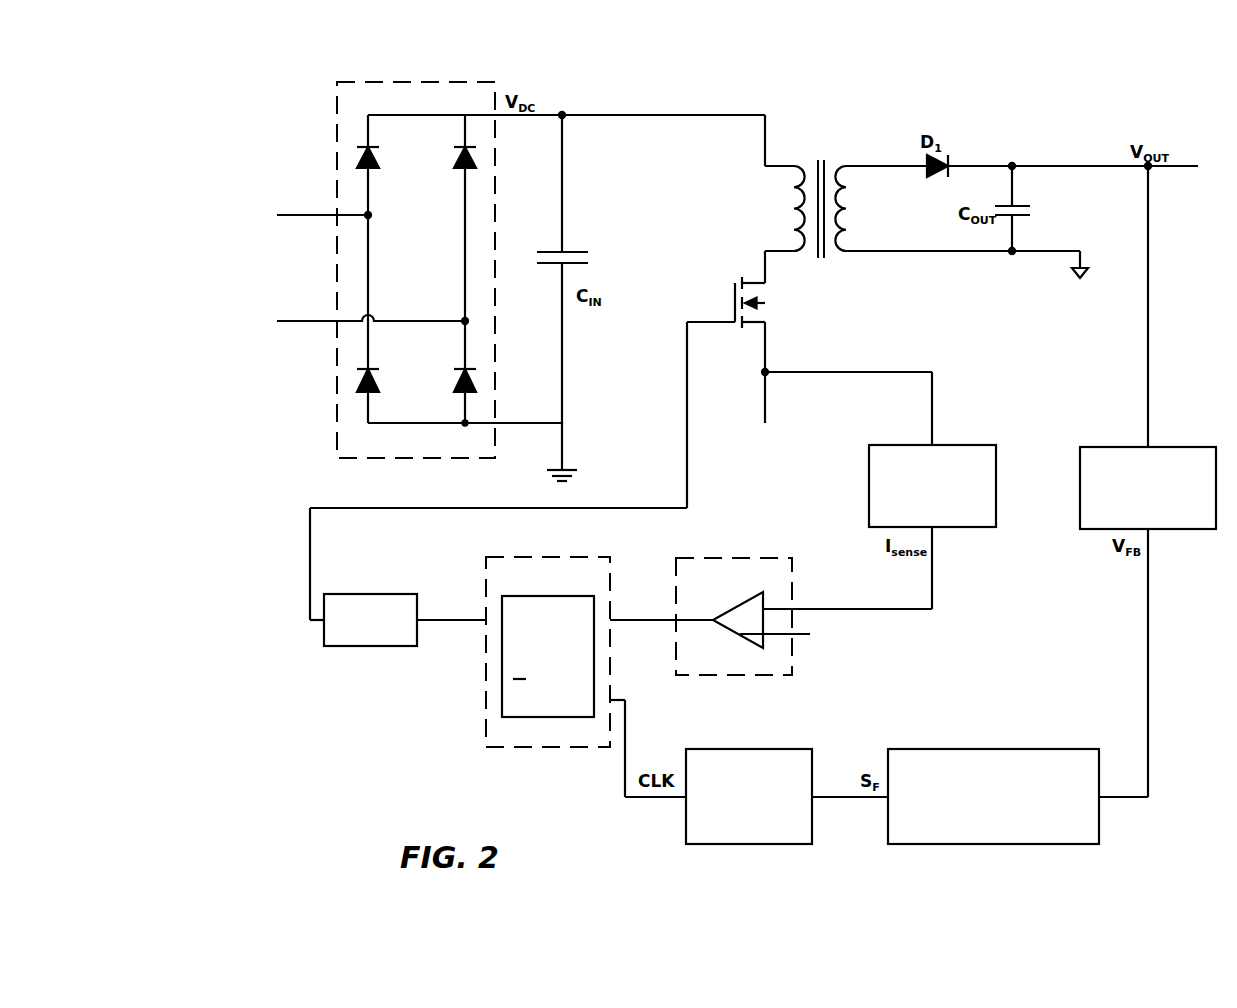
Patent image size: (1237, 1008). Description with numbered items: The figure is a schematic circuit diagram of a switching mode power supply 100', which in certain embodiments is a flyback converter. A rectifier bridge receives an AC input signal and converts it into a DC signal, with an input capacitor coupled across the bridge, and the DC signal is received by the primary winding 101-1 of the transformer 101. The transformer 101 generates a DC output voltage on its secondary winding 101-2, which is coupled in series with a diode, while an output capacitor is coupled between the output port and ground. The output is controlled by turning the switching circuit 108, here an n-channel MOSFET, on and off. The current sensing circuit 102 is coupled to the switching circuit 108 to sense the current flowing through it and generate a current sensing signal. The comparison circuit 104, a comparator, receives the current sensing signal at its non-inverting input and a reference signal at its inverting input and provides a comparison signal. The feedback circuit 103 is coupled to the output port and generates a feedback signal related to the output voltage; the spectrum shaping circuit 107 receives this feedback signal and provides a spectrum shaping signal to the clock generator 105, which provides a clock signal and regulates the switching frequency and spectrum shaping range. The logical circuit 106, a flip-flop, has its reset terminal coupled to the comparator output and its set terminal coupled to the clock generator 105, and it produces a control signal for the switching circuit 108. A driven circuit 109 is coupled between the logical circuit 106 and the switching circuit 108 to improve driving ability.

The switching mode power supply 100' is at (364, 267).
The transformer 101 is at (809, 219).
The primary winding 101-1 is at (780, 178).
The secondary winding 101-2 is at (852, 258).
The switching circuit 108 is at (770, 297).
The current sensing circuit 102 is at (958, 527).
The feedback circuit 103 is at (1180, 529).
The comparison circuit 104 is at (745, 675).
The clock generator 105 is at (782, 745).
The logical circuit 106 is at (540, 747).
The spectrum shaping circuit 107 is at (1008, 745).
The driven circuit 109 is at (388, 646).